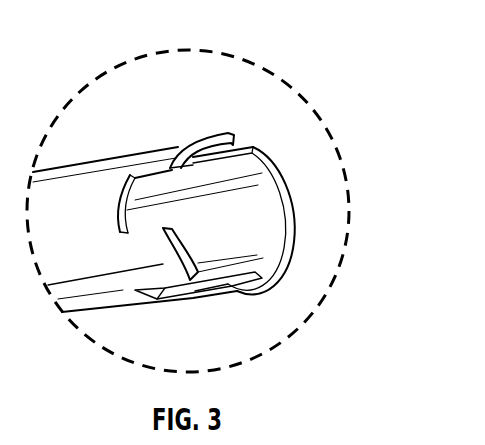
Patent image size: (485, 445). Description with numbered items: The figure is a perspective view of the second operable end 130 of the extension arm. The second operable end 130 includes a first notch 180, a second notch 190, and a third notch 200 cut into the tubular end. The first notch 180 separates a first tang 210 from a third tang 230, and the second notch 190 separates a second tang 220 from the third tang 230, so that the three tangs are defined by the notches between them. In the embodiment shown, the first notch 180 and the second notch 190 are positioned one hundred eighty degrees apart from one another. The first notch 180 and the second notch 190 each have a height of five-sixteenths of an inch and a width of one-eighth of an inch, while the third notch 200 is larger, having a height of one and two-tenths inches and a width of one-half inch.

The second operable end 130 is at (221, 86).
The first notch 180 is at (243, 136).
The second notch 190 is at (183, 298).
The third notch 200 is at (137, 174).
The first tang 210 is at (180, 146).
The second tang 220 is at (184, 246).
The third tang 230 is at (290, 207).